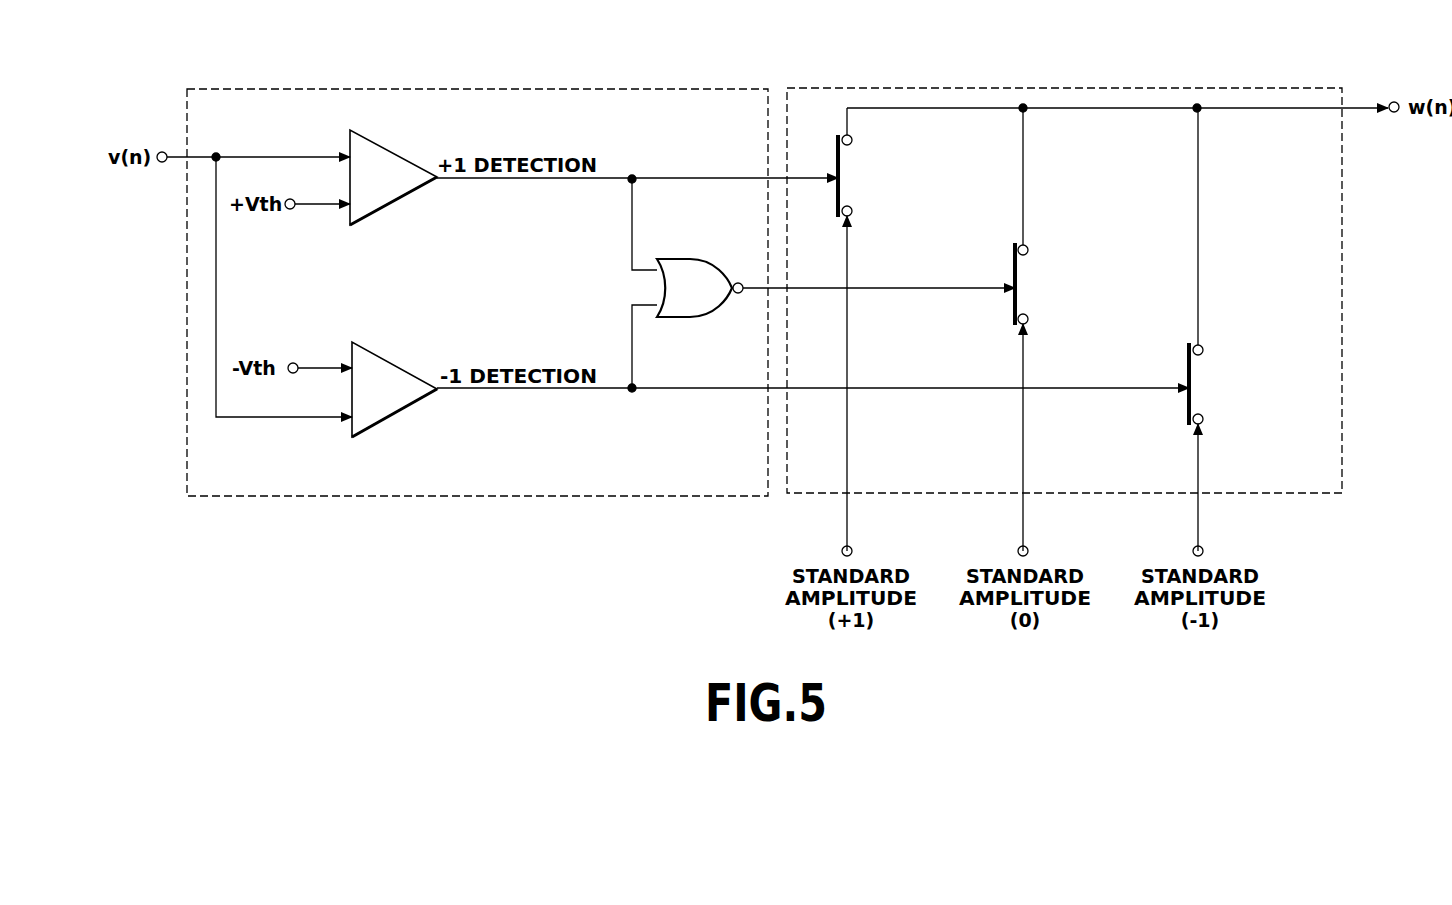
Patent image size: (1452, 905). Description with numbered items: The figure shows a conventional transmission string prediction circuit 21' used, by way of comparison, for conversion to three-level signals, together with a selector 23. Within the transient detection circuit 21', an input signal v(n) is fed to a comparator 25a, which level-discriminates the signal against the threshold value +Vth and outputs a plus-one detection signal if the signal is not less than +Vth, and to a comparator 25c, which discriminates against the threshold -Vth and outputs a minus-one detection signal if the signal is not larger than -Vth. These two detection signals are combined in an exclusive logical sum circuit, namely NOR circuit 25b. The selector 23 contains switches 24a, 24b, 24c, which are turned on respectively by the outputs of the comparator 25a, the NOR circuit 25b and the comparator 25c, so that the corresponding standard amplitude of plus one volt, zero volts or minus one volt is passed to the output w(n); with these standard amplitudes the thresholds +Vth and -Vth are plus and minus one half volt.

The transmission string prediction circuit 21' is at (477, 265).
The selector 23 is at (1260, 85).
The switch 24a is at (842, 180).
The switch 24b is at (1020, 288).
The switch 24c is at (1195, 390).
The comparator 25a is at (393, 152).
The exclusive logical sum circuit (NOR) 25b is at (715, 244).
The comparator 25c is at (385, 343).